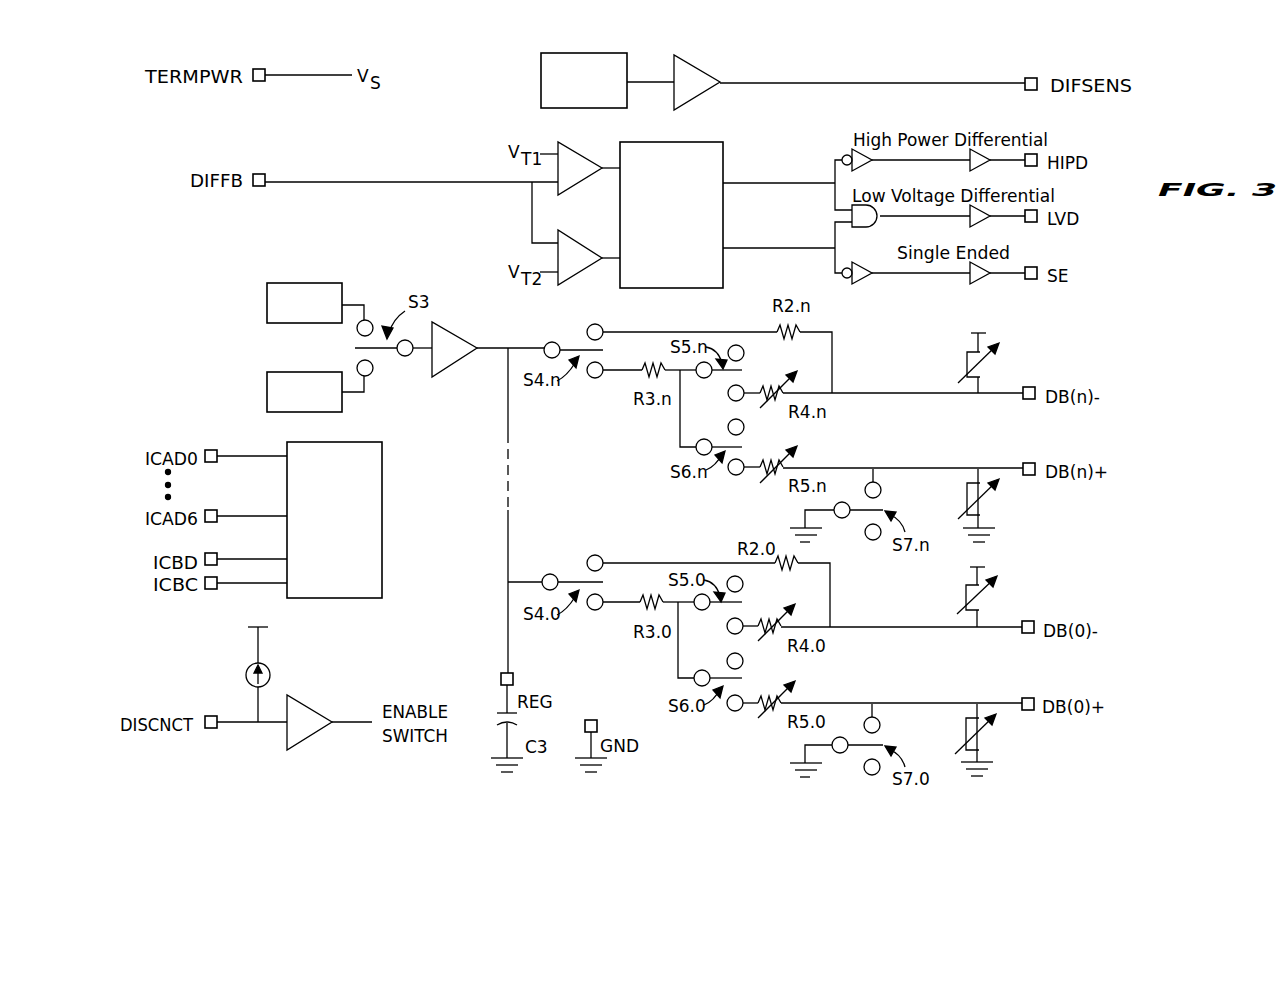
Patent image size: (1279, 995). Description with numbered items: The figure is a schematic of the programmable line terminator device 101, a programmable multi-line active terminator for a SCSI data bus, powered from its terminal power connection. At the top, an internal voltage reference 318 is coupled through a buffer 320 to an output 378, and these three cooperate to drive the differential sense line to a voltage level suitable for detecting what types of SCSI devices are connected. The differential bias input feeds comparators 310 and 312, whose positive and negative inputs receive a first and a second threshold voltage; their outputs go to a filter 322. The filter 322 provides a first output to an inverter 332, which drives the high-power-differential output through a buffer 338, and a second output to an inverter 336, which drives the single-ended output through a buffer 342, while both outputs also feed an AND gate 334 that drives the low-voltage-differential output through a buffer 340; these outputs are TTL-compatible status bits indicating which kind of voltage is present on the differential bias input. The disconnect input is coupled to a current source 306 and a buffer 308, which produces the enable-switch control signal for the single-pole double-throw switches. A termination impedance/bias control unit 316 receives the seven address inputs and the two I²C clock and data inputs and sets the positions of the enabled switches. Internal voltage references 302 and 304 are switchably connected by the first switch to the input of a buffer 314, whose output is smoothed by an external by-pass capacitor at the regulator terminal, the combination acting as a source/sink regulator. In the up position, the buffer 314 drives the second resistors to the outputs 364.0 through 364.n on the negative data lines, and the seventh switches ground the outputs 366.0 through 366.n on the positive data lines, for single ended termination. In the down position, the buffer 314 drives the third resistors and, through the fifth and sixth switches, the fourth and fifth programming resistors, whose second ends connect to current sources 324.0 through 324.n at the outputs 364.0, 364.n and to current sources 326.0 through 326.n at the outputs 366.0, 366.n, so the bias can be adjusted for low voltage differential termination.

The programmable line terminator device 101 is at (1185, 717).
The internal voltage reference 302 is at (288, 283).
The internal voltage reference 304 is at (288, 412).
The current source 306 is at (265, 662).
The buffer 308 is at (311, 741).
The comparator 310 is at (571, 146).
The comparator 312 is at (571, 236).
The buffer 314 is at (459, 337).
The termination impedance/bias control unit 316 is at (350, 579).
The internal voltage reference 318 is at (563, 53).
The buffer 320 is at (700, 69).
The filter 322 is at (658, 237).
The current source 324.n is at (958, 363).
The current source 324.0 is at (956, 597).
The current source 326.n is at (997, 505).
The current source 326.0 is at (994, 740).
The inverter 332 is at (867, 170).
The AND gate 334 is at (881, 226).
The inverter 336 is at (867, 283).
The buffer 338 is at (985, 170).
The buffer 340 is at (985, 226).
The buffer 342 is at (985, 285).
The output 364.n is at (1028, 401).
The output 364.0 is at (1026, 634).
The output 366.n is at (1028, 461).
The output 366.0 is at (1026, 695).
The output 378 is at (1028, 78).